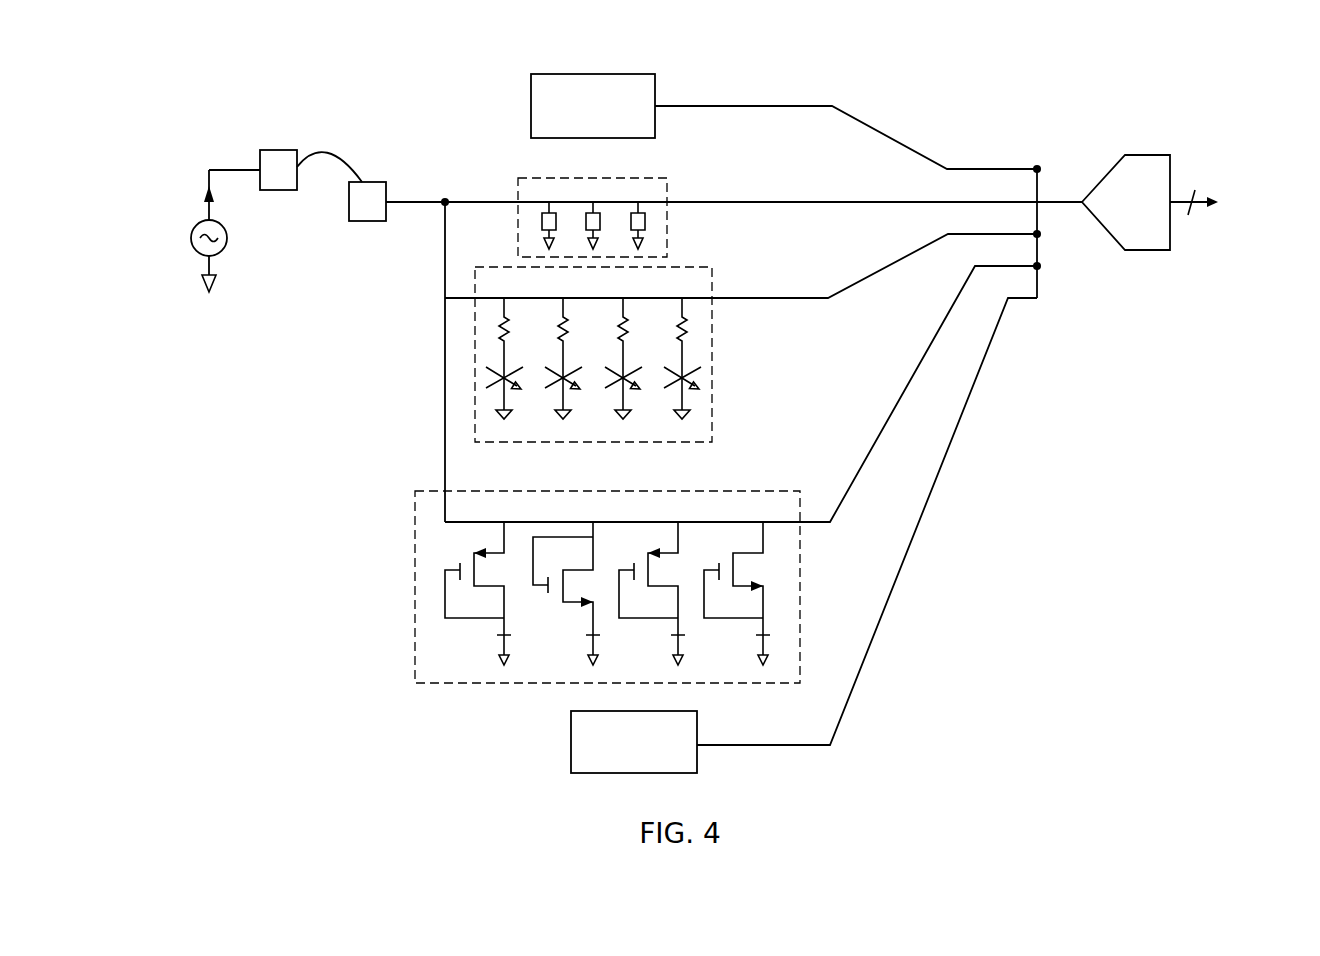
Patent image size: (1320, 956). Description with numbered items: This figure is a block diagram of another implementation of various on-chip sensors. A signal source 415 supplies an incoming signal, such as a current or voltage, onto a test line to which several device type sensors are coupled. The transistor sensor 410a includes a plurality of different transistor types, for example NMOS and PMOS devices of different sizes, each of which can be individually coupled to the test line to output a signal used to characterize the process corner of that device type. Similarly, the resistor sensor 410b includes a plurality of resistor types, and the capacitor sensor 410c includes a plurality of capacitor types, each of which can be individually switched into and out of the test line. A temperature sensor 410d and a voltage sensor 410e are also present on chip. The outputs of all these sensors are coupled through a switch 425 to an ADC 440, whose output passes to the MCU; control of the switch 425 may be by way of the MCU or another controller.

The transistor sensor 410a is at (654, 177).
The resistor sensor 410b is at (700, 266).
The capacitor sensor 410c is at (780, 490).
The temperature sensor 410d is at (583, 73).
The voltage sensor 410e is at (697, 721).
The AC power source 415 is at (192, 256).
The switch 425 is at (1050, 156).
The ADC 440 is at (1140, 153).